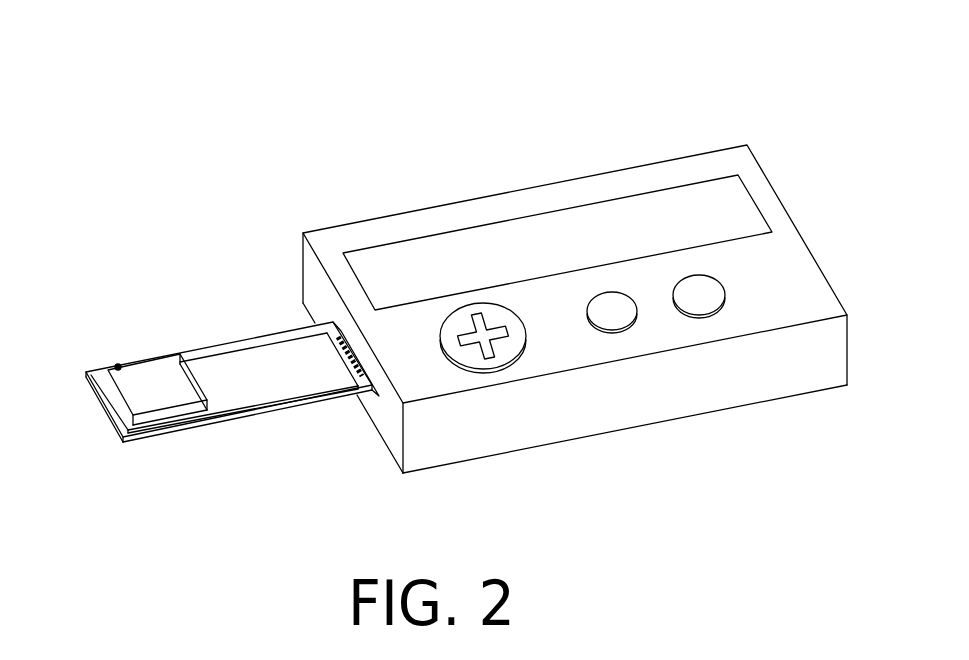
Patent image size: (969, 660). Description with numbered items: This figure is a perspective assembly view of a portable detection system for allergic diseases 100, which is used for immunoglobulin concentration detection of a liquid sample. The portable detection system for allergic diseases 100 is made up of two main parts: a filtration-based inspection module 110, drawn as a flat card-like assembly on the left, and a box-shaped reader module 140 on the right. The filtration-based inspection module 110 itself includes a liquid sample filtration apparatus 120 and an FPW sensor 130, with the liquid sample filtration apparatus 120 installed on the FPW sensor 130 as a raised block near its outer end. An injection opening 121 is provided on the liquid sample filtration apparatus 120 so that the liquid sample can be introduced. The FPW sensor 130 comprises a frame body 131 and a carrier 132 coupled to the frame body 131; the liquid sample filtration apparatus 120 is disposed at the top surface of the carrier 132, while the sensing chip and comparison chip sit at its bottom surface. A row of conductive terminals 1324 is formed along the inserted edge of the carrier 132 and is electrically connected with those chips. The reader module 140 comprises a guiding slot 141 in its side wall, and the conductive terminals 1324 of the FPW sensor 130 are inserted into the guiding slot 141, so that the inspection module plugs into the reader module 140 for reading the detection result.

The portable detection system for allergic diseases 100 is at (221, 94).
The filtration-based inspection module 110 is at (101, 253).
The liquid sample filtration apparatus 120 is at (170, 330).
The injection opening 121 is at (117, 362).
The FPW sensor 130 is at (177, 462).
The frame body 131 is at (247, 418).
The carrier 132 is at (272, 353).
The conductive terminals 1324 is at (344, 340).
The reader module 140 is at (577, 147).
The guiding slot 141 is at (350, 392).